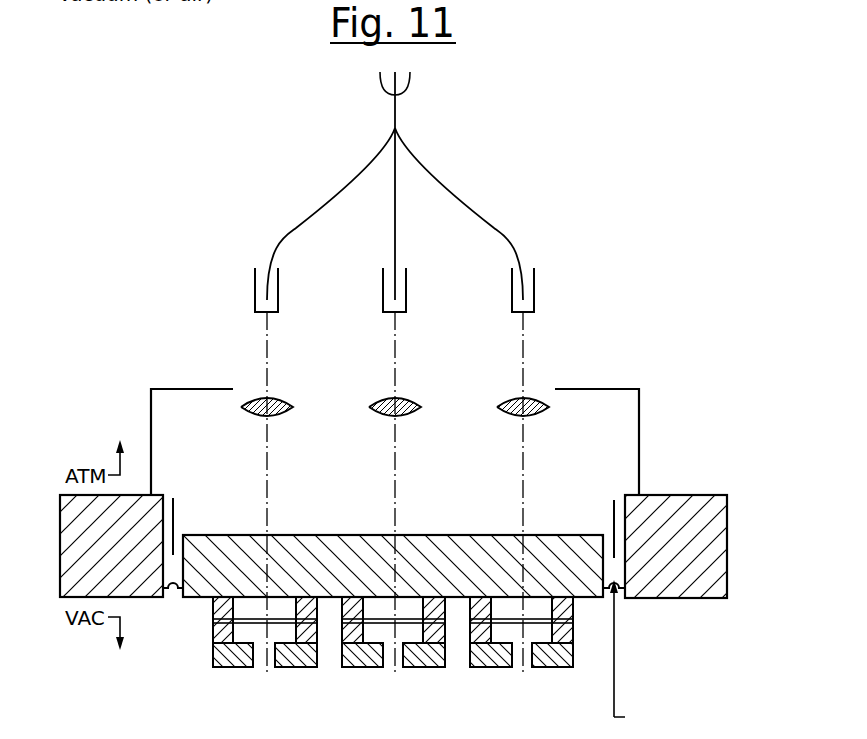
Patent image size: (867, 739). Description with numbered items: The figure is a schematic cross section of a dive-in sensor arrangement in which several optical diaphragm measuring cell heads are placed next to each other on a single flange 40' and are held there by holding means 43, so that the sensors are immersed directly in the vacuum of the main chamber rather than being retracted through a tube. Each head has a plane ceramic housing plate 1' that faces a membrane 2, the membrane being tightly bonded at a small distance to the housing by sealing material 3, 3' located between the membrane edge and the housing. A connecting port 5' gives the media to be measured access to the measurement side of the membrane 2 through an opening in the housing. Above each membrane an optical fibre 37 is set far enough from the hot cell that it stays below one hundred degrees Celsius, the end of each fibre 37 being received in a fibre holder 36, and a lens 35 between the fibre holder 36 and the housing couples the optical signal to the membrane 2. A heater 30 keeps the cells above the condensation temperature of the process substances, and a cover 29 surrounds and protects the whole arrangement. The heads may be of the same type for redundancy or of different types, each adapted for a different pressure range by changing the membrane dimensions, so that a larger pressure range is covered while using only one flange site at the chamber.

The housing plate 1' is at (355, 612).
The membrane 2 is at (283, 622).
The sealing material 3 is at (341, 663).
The sealing material 3' is at (358, 674).
The connecting port 5' is at (238, 695).
The cover 29 is at (639, 415).
The heater 30 is at (615, 499).
The lens 35 is at (259, 409).
The optical fiber holder 36 is at (257, 290).
The fibre 37 is at (296, 228).
The flange 40' is at (700, 546).
The holding means 43 is at (631, 655).